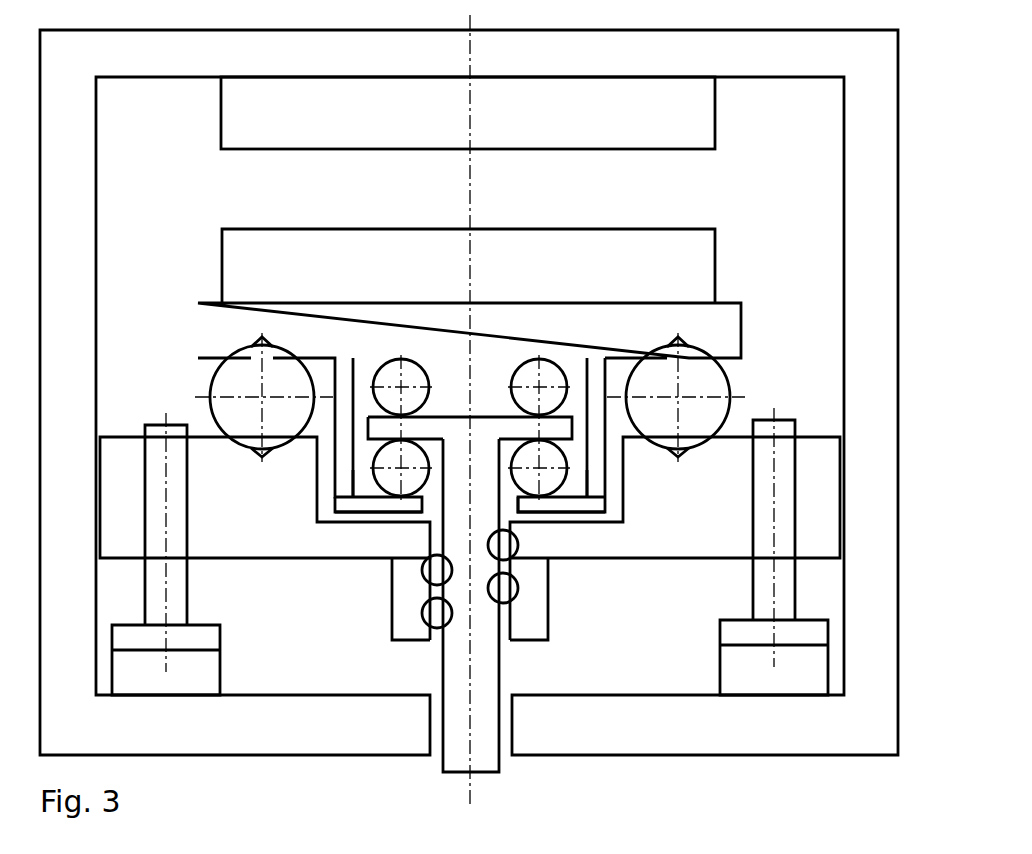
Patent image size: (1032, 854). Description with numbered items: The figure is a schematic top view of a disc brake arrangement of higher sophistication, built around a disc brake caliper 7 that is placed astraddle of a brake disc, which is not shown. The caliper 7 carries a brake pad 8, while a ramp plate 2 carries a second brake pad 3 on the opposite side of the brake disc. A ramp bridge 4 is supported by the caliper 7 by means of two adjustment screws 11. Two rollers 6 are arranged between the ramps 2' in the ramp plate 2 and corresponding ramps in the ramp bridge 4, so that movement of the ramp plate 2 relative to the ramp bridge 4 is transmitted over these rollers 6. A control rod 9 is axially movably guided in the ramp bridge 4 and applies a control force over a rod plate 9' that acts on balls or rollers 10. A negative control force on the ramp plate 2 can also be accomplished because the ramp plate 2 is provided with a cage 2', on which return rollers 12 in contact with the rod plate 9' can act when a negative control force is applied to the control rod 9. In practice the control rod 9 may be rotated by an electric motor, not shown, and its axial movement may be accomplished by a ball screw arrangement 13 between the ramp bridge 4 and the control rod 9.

The ramp plate 2 is at (579, 407).
The ramps / cage 2' is at (442, 537).
The brake pad 3 is at (688, 266).
The ramp bridge 4 is at (818, 487).
The rollers 6 is at (232, 384).
The disc brake caliper 7 is at (876, 201).
The brake pad 8 is at (690, 113).
The control rod 9 is at (497, 605).
The rod plate 9' is at (509, 509).
The balls or rollers 10 is at (390, 378).
The adjustment screws 11 is at (175, 606).
The return rollers 12 is at (390, 478).
The ball screw arrangement 13 is at (440, 590).